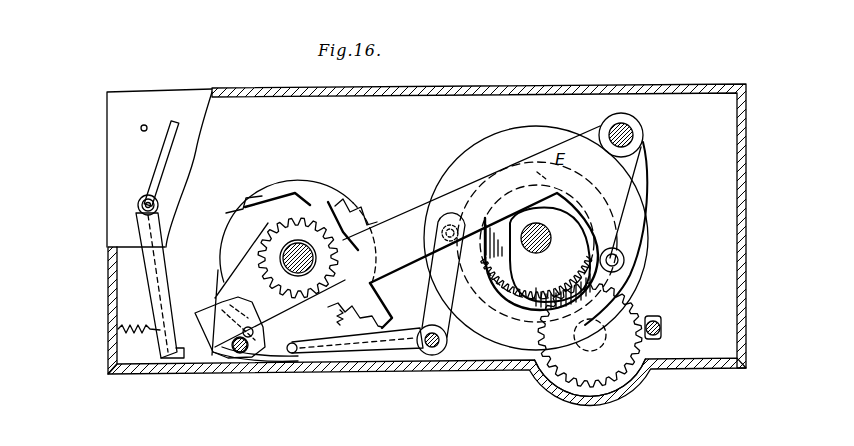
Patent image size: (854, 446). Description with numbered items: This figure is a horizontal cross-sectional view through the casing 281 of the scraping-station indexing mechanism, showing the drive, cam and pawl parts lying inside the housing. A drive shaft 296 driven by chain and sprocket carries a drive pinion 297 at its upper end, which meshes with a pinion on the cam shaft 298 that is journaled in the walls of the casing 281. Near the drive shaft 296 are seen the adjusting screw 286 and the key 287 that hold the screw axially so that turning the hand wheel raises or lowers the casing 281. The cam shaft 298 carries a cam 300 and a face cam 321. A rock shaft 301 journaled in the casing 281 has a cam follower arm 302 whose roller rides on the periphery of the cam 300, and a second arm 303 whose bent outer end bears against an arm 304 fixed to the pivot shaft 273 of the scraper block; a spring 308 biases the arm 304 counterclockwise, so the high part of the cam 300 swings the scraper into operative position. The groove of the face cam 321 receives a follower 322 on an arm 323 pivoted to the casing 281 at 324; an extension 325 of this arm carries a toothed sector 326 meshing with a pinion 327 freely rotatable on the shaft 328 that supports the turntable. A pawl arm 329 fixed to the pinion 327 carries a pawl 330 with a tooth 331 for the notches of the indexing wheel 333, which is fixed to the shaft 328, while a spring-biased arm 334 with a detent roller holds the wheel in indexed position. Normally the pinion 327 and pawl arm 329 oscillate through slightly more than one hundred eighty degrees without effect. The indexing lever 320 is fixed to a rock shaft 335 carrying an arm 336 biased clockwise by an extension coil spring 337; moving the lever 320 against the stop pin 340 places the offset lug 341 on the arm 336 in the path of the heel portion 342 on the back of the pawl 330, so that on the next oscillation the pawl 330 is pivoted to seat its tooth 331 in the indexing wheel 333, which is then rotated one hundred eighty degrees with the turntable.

The casing 281 is at (662, 86).
The drive pinion 297 is at (547, 364).
The stop pin 340 is at (145, 125).
The indexing lever 320 is at (165, 150).
The rock shaft 335 is at (140, 208).
The arm 336 is at (150, 282).
The offset lug 341 is at (180, 358).
The extension coil spring 337 is at (130, 333).
The shaft 328 is at (303, 245).
The indexing wheel 333 is at (278, 182).
The pinion 327 is at (275, 227).
The pawl arm 329 is at (240, 208).
The toothed sector 326 is at (352, 203).
The extension 325 is at (393, 227).
The pawl 330 is at (220, 310).
The tooth 331 is at (228, 312).
The pivot shaft 273 is at (243, 352).
The heel portion 342 is at (206, 352).
The spring 308 is at (287, 335).
The arm 304 is at (291, 355).
The second arm 303 is at (402, 348).
The spring-biased arm 334 is at (347, 330).
The rock shaft 301 is at (436, 352).
The cam follower arm 302 is at (427, 310).
The cam 300 is at (470, 197).
The face cam 321 is at (475, 152).
The cam shaft 298 is at (537, 254).
The pivot 324 is at (636, 135).
The arm 323 is at (626, 203).
The follower 322 is at (625, 258).
The drive shaft 296 is at (590, 340).
The key 287 is at (655, 318).
The adjusting screw 286 is at (657, 333).